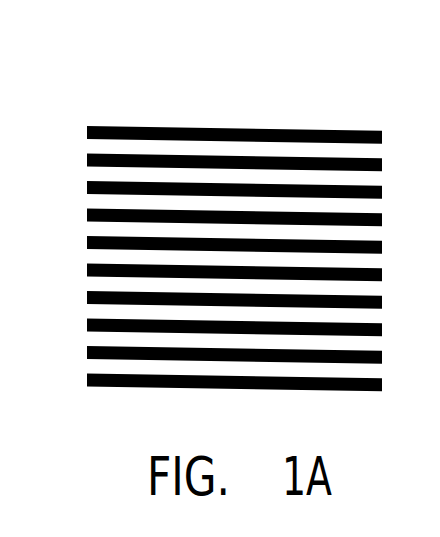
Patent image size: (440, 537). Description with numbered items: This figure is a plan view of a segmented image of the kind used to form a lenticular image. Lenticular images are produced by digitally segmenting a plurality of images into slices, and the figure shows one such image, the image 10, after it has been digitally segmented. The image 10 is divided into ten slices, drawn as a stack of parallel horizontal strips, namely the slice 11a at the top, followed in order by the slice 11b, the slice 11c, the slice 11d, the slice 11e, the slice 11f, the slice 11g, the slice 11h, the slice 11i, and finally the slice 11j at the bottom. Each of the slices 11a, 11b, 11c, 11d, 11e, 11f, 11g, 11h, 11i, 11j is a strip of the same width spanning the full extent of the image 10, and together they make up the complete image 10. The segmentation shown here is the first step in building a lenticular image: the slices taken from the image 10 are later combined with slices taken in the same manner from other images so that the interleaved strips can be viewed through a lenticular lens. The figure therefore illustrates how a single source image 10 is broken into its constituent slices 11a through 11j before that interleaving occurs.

The image 10 is at (84, 64).
The slice 11a is at (202, 132).
The slice 11b is at (202, 159).
The slice 11c is at (202, 187).
The slice 11d is at (202, 214).
The slice 11e is at (202, 242).
The slice 11f is at (202, 269).
The slice 11g is at (202, 297).
The slice 11h is at (202, 324).
The slice 11i is at (202, 352).
The slice 11j is at (202, 379).